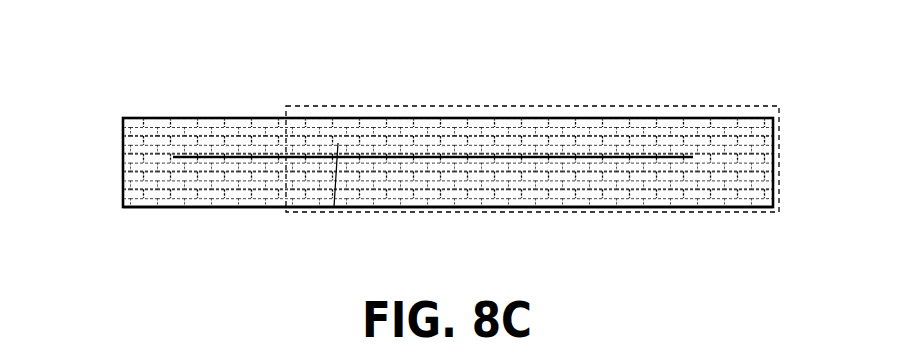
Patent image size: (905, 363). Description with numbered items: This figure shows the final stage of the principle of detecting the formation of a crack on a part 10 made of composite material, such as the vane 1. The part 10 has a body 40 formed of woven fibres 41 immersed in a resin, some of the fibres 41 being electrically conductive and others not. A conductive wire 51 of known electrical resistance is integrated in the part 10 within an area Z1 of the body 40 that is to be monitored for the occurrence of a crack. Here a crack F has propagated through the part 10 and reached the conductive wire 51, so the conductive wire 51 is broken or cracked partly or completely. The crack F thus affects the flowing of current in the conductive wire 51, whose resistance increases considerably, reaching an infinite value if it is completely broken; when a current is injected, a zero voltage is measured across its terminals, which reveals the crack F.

The vane 1 is at (242, 118).
The part 10 is at (113, 178).
The area Z1 is at (742, 106).
The conductive wire 51 is at (553, 157).
The crack F is at (334, 207).
The body 40 is at (758, 187).
The fibres 41 is at (710, 197).